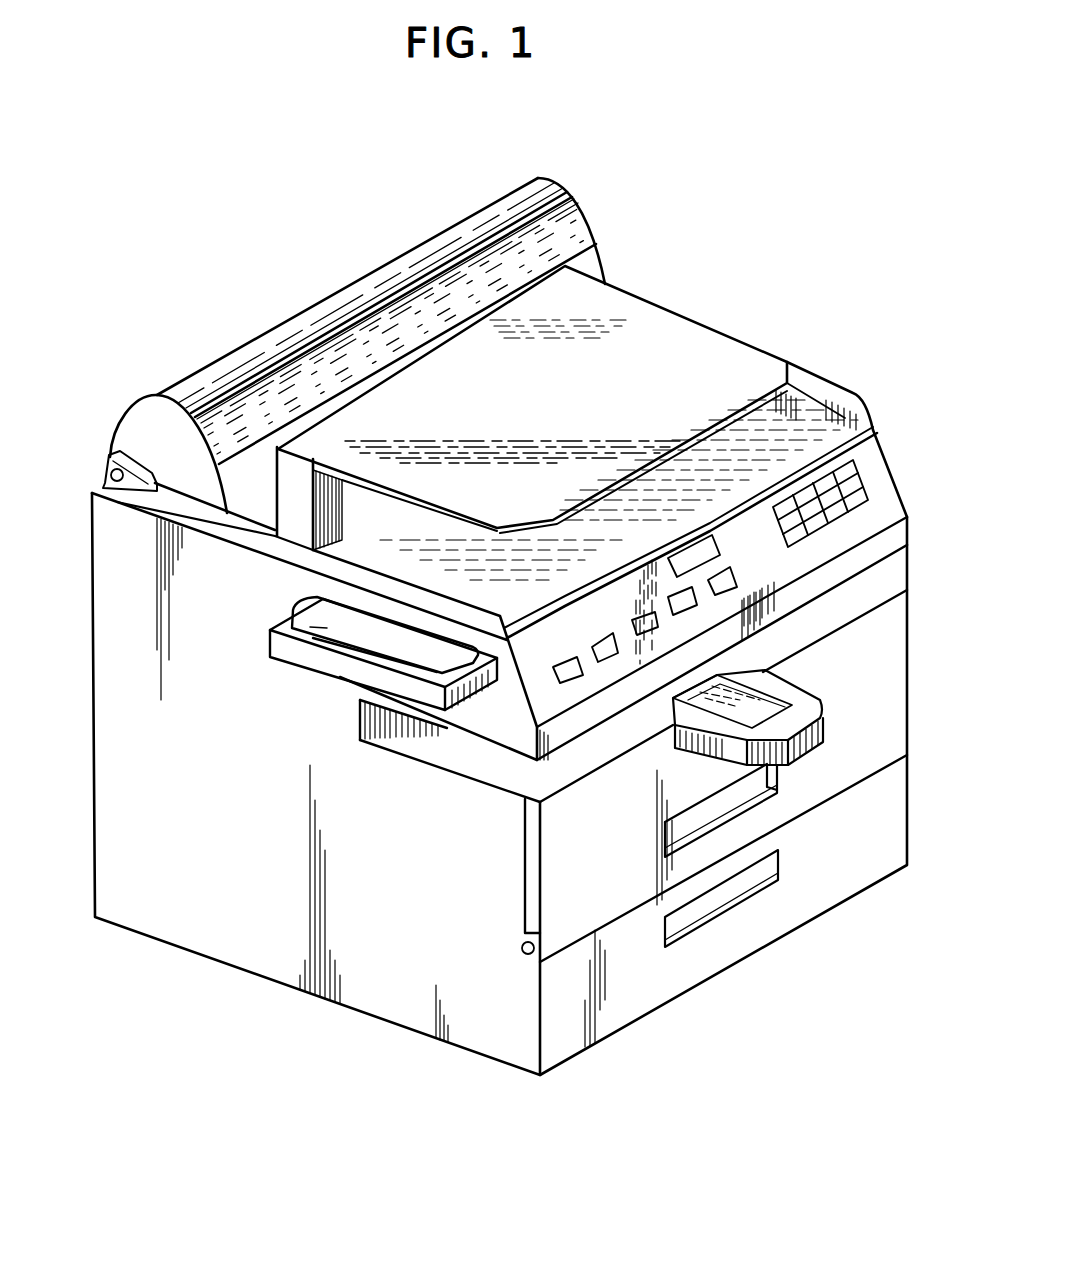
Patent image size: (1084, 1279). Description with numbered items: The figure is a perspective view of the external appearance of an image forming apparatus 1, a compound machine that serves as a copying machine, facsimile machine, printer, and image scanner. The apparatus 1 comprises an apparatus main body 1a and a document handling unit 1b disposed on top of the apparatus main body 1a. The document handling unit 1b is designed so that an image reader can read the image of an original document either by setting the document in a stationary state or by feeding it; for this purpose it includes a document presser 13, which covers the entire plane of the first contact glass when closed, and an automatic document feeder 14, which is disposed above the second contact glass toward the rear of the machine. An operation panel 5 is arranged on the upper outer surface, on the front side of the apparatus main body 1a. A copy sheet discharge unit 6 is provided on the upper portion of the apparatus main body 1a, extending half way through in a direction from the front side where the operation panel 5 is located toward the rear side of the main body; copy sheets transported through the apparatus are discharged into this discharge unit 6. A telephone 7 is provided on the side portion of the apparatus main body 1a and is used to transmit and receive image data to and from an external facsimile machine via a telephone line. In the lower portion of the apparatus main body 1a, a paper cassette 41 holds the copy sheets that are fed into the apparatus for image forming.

The image forming apparatus 1 is at (783, 174).
The apparatus main body 1a is at (892, 571).
The document handling unit 1b is at (870, 397).
The operation panel 5 is at (867, 476).
The copy sheet discharge unit 6 is at (453, 746).
The telephone 7 is at (313, 630).
The document presser 13 is at (393, 520).
The automatic document feeder 14 is at (582, 203).
The paper cassette 41 is at (632, 992).